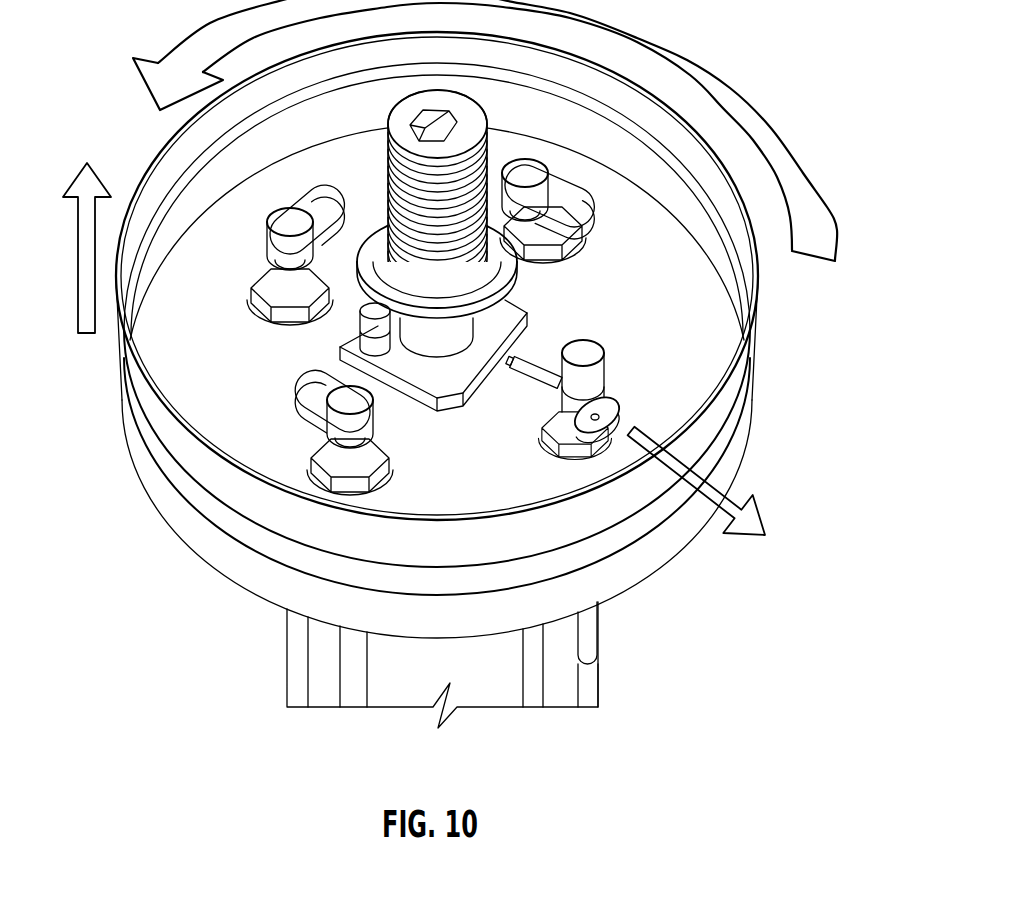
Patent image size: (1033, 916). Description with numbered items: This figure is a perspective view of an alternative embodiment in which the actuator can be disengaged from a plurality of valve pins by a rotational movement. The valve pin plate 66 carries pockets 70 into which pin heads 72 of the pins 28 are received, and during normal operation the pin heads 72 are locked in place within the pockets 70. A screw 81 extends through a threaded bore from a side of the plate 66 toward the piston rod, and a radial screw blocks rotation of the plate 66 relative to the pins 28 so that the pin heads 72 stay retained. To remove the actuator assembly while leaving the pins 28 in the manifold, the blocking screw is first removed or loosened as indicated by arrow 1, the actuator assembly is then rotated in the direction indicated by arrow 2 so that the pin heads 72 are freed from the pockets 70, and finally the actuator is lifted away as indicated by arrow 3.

The arrow 1 is at (706, 489).
The arrow 2 is at (485, 130).
The arrow 3 is at (83, 248).
The pins 28 is at (600, 683).
The valve pin plate 66 is at (728, 385).
The pockets 70 is at (320, 383).
The pin heads 72 is at (523, 173).
The screw 81 is at (592, 395).